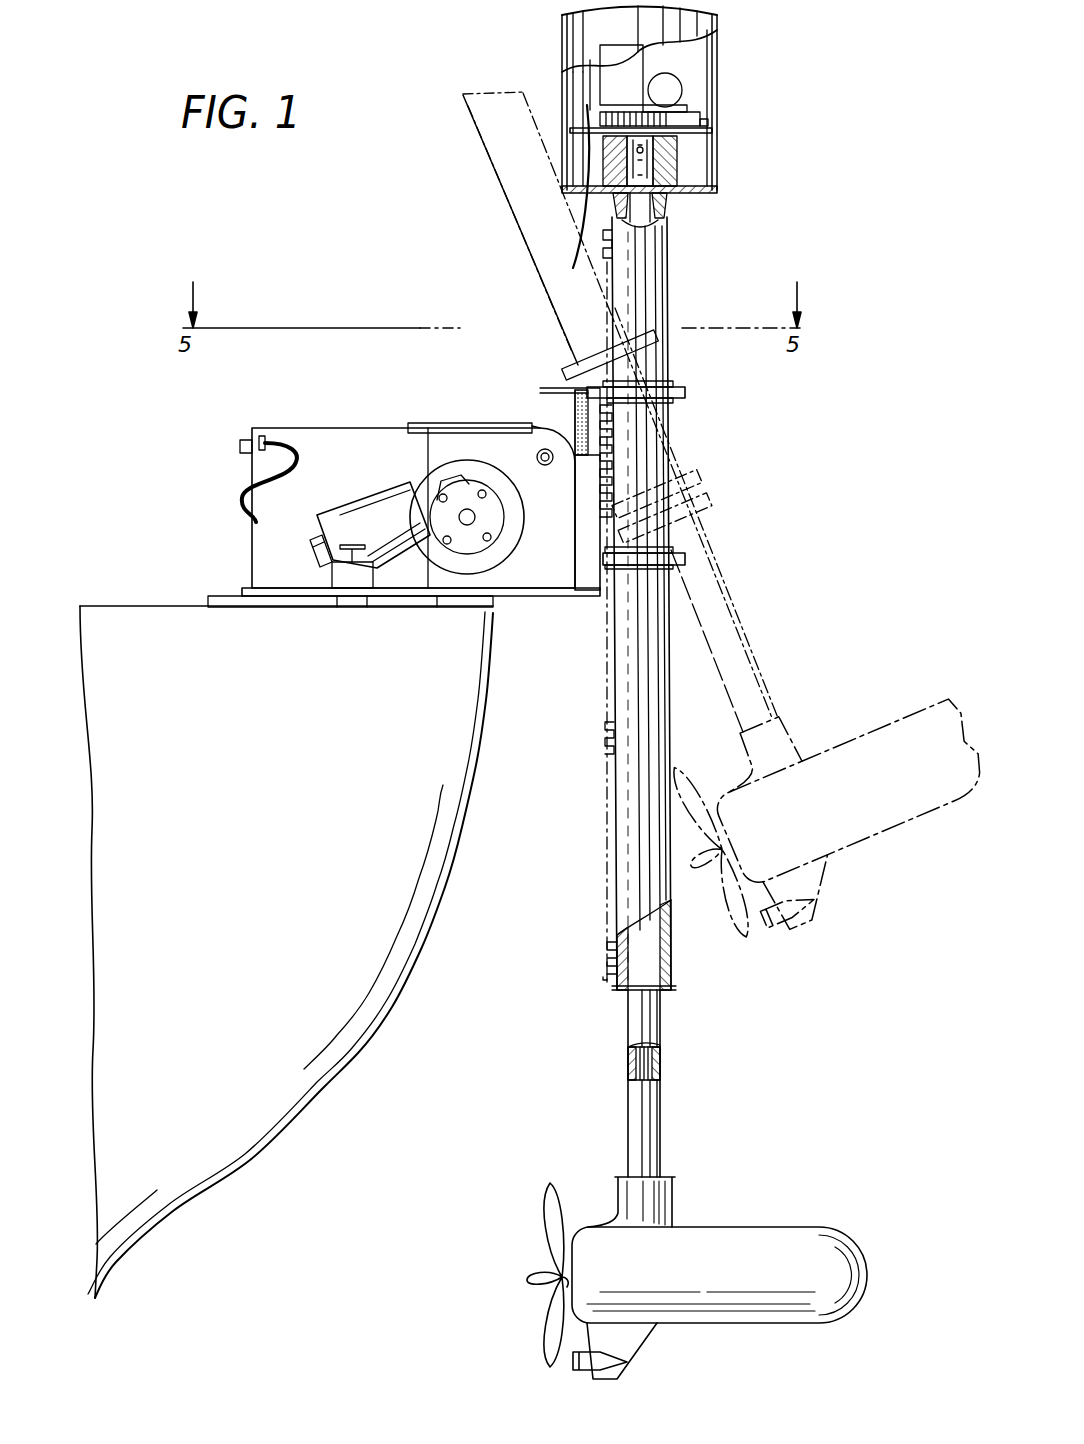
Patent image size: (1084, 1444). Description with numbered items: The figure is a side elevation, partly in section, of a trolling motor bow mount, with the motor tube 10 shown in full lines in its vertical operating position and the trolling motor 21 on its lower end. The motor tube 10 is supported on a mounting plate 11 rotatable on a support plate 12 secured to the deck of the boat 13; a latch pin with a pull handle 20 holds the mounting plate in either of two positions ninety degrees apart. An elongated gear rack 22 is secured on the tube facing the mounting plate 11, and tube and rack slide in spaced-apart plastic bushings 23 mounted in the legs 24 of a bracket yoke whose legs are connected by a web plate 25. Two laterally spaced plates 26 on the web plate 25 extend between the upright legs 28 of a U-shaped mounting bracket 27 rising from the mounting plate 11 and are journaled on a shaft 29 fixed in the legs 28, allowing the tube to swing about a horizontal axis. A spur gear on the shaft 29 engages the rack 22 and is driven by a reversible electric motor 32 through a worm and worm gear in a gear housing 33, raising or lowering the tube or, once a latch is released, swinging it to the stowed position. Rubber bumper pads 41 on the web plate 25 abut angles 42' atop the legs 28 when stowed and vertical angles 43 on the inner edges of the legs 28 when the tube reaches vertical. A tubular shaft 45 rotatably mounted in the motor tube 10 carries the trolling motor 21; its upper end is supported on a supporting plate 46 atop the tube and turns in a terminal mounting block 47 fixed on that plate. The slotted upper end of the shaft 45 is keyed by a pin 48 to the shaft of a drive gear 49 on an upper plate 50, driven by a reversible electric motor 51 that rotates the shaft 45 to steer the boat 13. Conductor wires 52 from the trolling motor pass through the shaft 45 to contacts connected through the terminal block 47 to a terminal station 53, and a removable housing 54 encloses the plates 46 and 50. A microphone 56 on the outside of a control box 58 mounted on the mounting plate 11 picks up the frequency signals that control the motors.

The motor tube 10 is at (676, 271).
The mounting plate 11 is at (262, 583).
The support plate 12 is at (207, 597).
The boat 13 is at (437, 906).
The pull handle 20 is at (360, 548).
The trolling motor 21 is at (853, 738).
The gear rack 22 is at (608, 712).
The plastic bushings 23 is at (665, 382).
The legs 24 is at (686, 393).
The web plate 25 is at (596, 424).
The plates 26 is at (520, 414).
The U-shaped mounting bracket 27 is at (424, 455).
The upright legs 28 is at (447, 436).
The shaft 29 is at (546, 466).
The reversible electric motor 32 is at (362, 505).
The gear housing 33 is at (493, 521).
The rubber bumper pads 41 is at (575, 416).
The plate 42' is at (499, 406).
The vertical angles 43 is at (583, 572).
The tubular shaft 45 is at (650, 1016).
The supporting plate 46 is at (693, 197).
The terminal mounting block 47 is at (673, 175).
The pin 48 is at (640, 147).
The drive gear 49 is at (673, 122).
The upper plate 50 is at (690, 132).
The reversible electric motor 51 is at (603, 68).
The conductor wires 52 is at (660, 1066).
The terminal station 53 is at (680, 90).
The removable housing 54 is at (714, 19).
The microphone 56 is at (240, 446).
The control box 58 is at (252, 523).